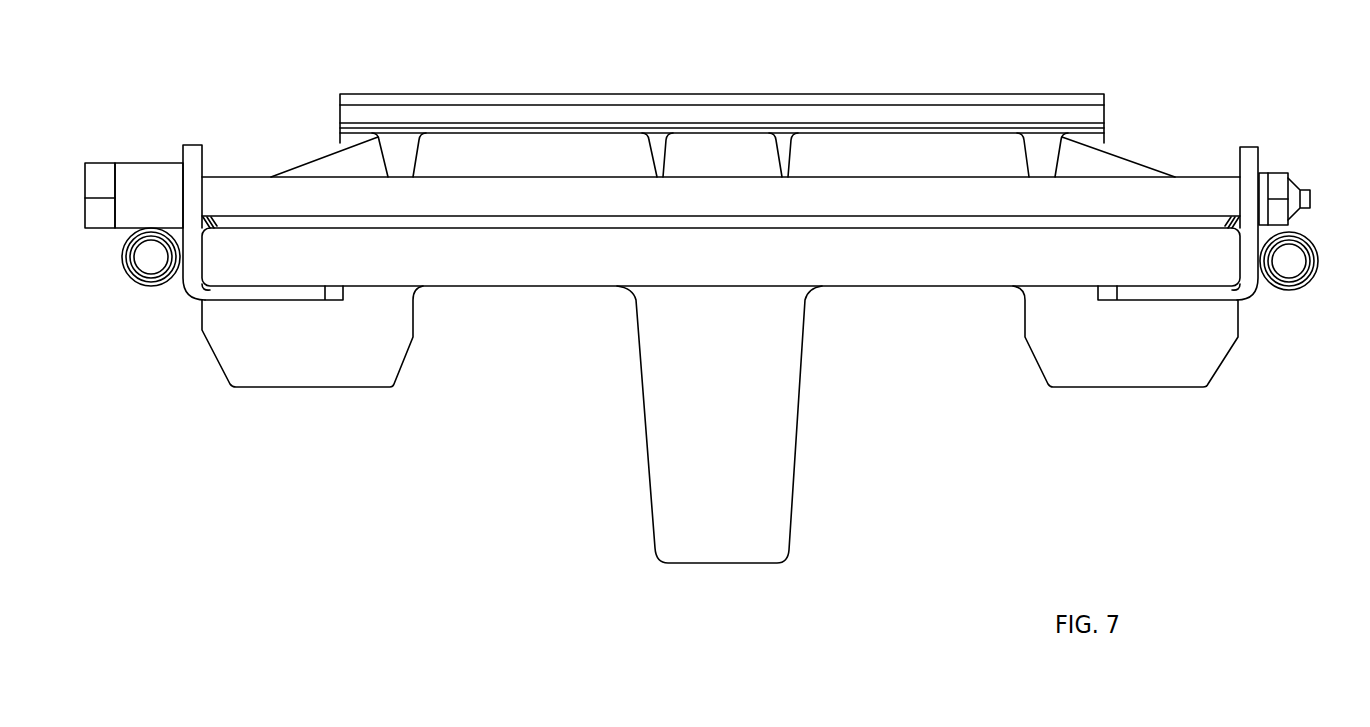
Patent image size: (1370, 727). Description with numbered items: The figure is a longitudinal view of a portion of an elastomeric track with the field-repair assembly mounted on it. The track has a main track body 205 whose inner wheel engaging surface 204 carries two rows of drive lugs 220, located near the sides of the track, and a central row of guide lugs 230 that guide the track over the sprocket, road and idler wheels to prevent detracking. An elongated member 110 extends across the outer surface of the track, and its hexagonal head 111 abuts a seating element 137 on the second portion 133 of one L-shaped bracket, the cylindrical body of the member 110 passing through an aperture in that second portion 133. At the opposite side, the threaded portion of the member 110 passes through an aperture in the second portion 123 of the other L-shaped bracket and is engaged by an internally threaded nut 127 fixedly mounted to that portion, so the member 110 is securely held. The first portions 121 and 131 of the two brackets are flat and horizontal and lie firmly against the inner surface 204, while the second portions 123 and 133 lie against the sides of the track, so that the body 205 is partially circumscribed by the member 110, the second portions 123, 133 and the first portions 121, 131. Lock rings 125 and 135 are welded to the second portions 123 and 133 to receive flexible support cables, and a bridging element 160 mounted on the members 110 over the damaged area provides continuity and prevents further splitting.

The member 110 is at (1193, 192).
The head 111 is at (93, 148).
The first portion 121 is at (1137, 296).
The second portion 123 is at (1250, 155).
The lock rings 125 is at (1290, 288).
The internally threaded nut 127 is at (1272, 180).
The first portion 131 is at (250, 295).
The second portion 133 is at (193, 158).
The lock rings 135 is at (150, 290).
The seating element 137 is at (144, 178).
The bridging element 160 is at (738, 96).
The inner wheel engaging surface 204 is at (487, 513).
The main track body 205 is at (721, 257).
The drive lugs 220 is at (270, 376).
The guide lugs 230 is at (760, 551).